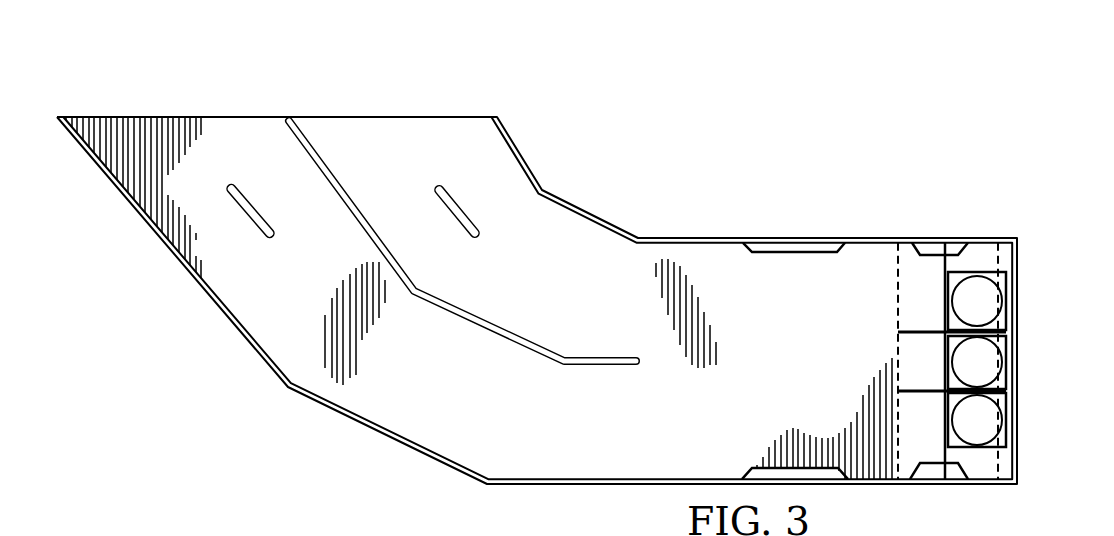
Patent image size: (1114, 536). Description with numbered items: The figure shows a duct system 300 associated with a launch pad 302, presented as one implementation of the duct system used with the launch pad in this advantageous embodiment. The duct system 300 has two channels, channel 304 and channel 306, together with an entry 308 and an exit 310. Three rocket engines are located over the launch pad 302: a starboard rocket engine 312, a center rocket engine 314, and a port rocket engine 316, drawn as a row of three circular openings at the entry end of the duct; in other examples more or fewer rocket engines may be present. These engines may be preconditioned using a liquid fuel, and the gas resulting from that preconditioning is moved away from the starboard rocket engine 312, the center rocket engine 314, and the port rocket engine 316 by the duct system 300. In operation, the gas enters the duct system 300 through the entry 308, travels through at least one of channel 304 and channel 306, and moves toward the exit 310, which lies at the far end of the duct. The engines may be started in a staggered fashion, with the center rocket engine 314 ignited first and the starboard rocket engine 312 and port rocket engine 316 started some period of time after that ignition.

The duct system 300 is at (766, 117).
The launch pad 302 is at (998, 226).
The channel 304 is at (561, 284).
The channel 306 is at (468, 396).
The entry 308 is at (877, 258).
The exit 310 is at (288, 110).
The starboard rocket engine 312 is at (977, 301).
The center rocket engine 314 is at (977, 362).
The port rocket engine 316 is at (977, 420).